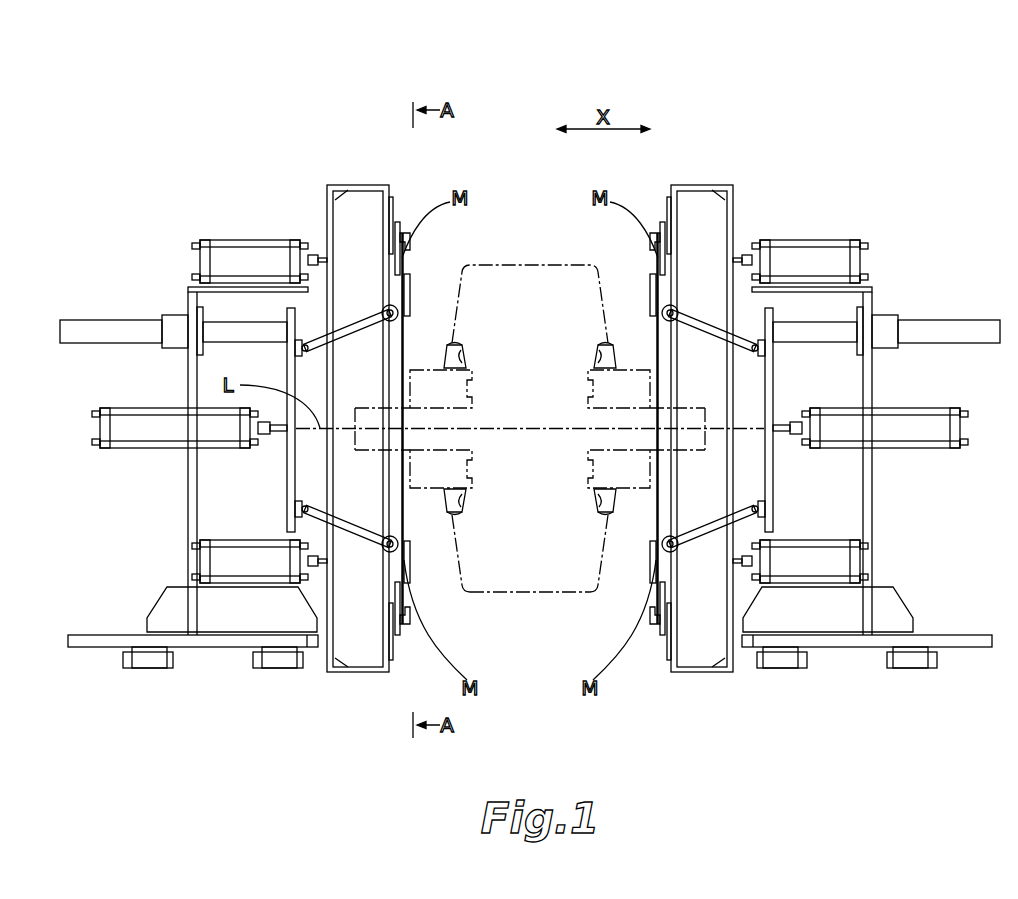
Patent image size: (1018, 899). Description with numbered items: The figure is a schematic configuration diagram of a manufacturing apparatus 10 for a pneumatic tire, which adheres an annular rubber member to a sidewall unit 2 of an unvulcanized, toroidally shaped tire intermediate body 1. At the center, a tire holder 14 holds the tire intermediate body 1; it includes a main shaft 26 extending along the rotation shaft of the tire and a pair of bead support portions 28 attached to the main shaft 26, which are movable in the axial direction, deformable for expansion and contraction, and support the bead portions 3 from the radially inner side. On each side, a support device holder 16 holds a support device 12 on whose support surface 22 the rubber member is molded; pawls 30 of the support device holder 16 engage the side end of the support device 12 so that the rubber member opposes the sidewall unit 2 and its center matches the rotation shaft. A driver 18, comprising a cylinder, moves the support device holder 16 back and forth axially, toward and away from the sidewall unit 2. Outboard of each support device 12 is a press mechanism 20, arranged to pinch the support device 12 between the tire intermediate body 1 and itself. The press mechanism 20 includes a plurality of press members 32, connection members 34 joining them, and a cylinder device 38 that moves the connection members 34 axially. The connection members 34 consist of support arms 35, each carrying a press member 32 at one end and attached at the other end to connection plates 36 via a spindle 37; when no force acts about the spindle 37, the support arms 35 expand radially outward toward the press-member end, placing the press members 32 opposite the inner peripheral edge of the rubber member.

The manufacturing apparatus 10 is at (513, 42).
The tire intermediate body 1 is at (527, 592).
The sidewall unit 2 is at (462, 578).
The bead portions 3 is at (595, 512).
The support device 12 is at (405, 363).
The tire holder 14 is at (437, 493).
The support device holder 16 is at (348, 183).
The driver 18 is at (222, 541).
The press mechanism 20 is at (173, 463).
The support surface 22 is at (405, 298).
The main shaft 26 is at (437, 400).
The bead support portions 28 is at (594, 502).
The pawls 30 is at (407, 625).
The press members 32 is at (388, 551).
The connection members 34 is at (300, 360).
The support arms 35 is at (367, 531).
The connection plates 36 is at (290, 492).
The spindle 37 is at (305, 507).
The cylinder device 38 is at (155, 418).